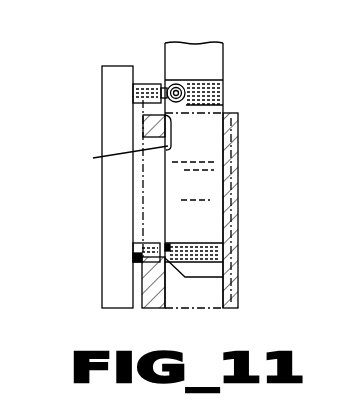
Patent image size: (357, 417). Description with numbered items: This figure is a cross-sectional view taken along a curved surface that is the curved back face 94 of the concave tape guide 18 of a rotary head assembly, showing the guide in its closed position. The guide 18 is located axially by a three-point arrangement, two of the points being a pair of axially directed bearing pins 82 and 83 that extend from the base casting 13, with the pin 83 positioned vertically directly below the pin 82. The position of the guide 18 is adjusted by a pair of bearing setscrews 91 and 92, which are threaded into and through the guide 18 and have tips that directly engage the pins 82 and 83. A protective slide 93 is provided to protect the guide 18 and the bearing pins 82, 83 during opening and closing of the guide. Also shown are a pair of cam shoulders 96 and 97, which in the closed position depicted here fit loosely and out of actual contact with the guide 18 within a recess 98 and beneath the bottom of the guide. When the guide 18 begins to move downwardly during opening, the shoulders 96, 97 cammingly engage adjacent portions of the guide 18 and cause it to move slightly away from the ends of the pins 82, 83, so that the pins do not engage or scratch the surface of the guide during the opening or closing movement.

The base casting 13 is at (108, 80).
The concave tape guide 18 is at (221, 54).
The bearing pin 82 is at (145, 88).
The bearing pin 83 is at (133, 248).
The bearing setscrew 91 is at (222, 93).
The bearing setscrew 92 is at (205, 262).
The protective slide 93 is at (236, 292).
The curved back face 94 is at (193, 181).
The cam shoulder 96 is at (168, 113).
The cam shoulder 97 is at (167, 247).
The recess 98 is at (118, 158).